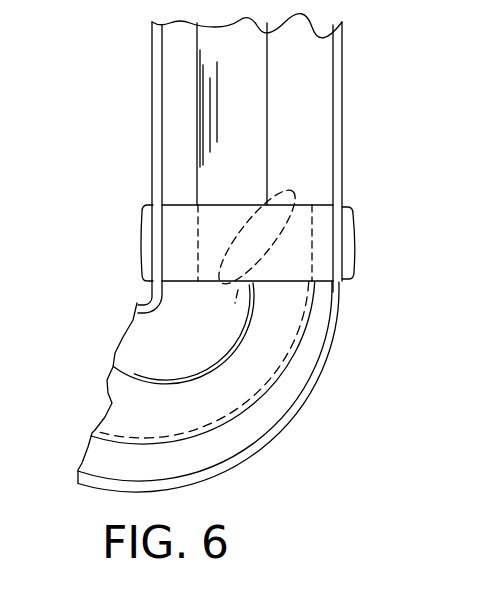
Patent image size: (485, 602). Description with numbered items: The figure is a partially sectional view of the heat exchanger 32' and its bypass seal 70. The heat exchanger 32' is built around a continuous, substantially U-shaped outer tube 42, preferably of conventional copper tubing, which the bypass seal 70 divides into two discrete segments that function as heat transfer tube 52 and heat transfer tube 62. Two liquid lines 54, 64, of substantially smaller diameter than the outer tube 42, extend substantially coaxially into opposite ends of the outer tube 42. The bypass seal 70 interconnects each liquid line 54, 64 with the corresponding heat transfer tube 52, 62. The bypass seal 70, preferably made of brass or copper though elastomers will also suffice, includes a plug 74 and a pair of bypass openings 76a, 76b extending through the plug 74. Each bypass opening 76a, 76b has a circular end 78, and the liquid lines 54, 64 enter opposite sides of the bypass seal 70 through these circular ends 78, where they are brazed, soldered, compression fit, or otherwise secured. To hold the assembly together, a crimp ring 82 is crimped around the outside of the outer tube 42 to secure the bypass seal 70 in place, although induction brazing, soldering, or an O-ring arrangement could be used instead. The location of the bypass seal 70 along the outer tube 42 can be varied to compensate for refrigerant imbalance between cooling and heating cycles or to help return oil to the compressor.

The heat exchanger 32' is at (451, 92).
The outer tube 42 is at (340, 330).
The heat transfer tube 52 is at (313, 97).
The liquid line 54 is at (183, 440).
The heat transfer tube 62 is at (268, 378).
The liquid line 64 is at (257, 67).
The bypass seal 70 is at (312, 204).
The plug 74 is at (323, 242).
The bypass opening 76a is at (197, 205).
The bypass opening 76b is at (304, 284).
The circular end 78 is at (298, 177).
The crimp ring 82 is at (354, 263).